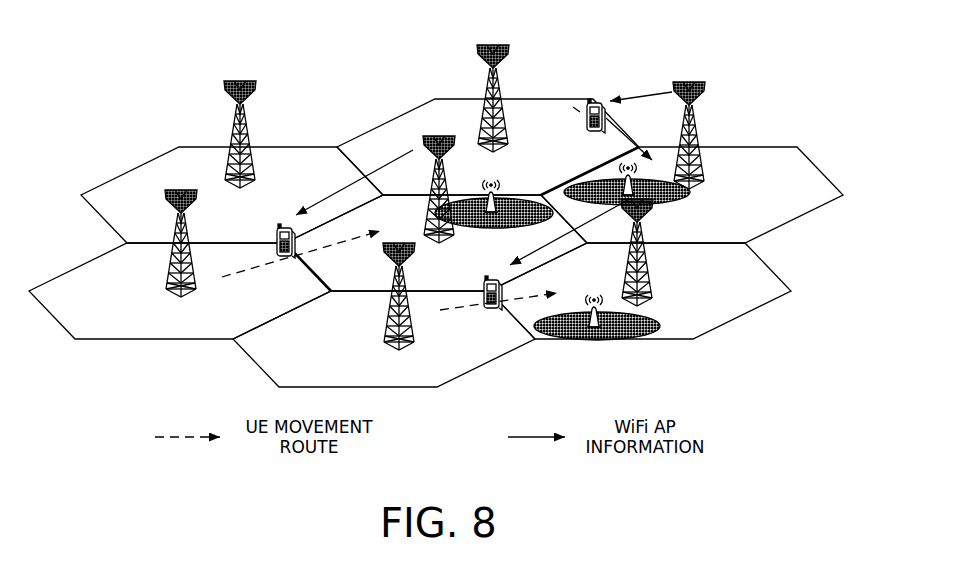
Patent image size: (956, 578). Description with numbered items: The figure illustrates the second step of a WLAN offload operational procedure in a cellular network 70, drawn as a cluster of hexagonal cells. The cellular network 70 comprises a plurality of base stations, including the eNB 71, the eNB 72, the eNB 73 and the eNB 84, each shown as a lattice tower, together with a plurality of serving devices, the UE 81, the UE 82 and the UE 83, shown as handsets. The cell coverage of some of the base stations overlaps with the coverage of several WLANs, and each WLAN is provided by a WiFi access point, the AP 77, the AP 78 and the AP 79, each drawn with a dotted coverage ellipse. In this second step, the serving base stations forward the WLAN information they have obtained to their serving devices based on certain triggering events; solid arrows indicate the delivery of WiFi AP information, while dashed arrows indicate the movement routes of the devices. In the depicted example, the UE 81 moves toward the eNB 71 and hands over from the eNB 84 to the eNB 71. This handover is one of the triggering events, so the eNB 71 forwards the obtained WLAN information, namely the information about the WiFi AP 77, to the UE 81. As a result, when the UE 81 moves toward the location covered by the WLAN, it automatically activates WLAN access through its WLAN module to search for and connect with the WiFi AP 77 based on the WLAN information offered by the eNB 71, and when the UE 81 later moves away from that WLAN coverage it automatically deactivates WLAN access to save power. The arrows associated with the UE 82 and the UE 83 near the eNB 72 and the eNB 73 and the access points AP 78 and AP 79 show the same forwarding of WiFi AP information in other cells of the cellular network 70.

The cellular network 70 is at (122, 48).
The eNB 71 is at (652, 287).
The eNB 72 is at (692, 81).
The eNB 73 is at (440, 136).
The eNB 84 is at (399, 242).
The WiFi AP 77 is at (597, 321).
The WiFi AP 78 is at (627, 184).
The WiFi AP 79 is at (494, 197).
The UE 81 is at (493, 305).
The UE 82 is at (588, 125).
The UE 83 is at (284, 255).